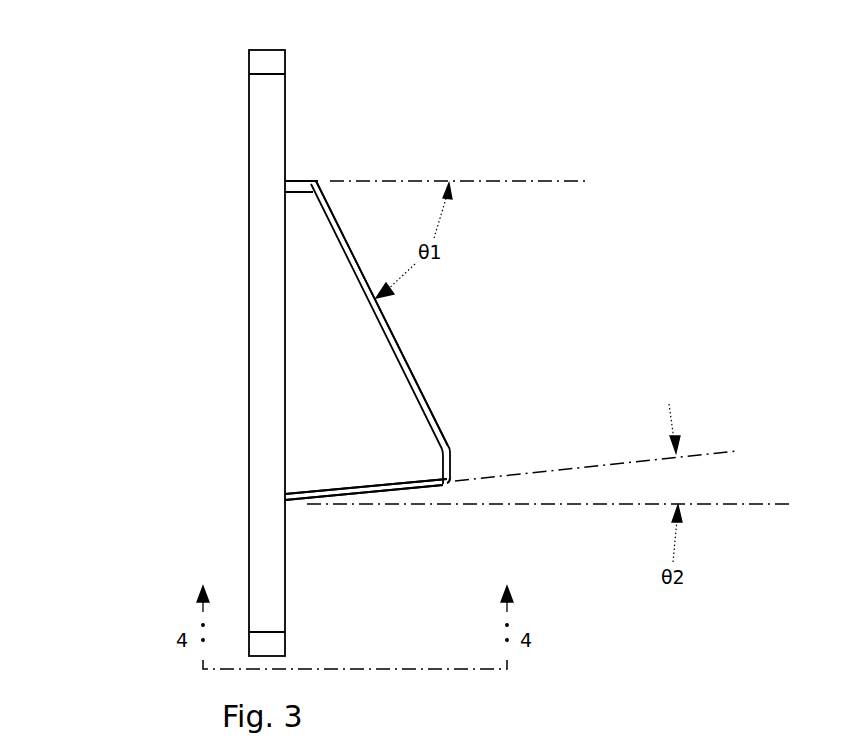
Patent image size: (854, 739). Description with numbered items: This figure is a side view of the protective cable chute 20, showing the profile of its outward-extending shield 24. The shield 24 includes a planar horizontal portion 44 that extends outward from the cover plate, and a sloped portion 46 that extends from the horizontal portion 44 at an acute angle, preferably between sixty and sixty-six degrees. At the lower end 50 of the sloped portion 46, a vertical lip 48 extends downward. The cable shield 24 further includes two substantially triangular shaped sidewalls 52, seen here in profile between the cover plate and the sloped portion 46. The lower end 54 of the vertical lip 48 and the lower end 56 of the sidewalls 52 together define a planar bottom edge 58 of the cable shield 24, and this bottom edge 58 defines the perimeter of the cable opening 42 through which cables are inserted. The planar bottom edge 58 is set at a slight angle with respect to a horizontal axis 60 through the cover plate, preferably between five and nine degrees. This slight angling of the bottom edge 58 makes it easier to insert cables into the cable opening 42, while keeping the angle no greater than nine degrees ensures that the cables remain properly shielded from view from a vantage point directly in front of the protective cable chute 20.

The protective cable chute 20 is at (138, 165).
The outward-extending shield 24 is at (413, 375).
The cable opening 42 is at (368, 499).
The planar horizontal portion 44 is at (297, 180).
The sloped portion 46 is at (381, 312).
The vertical lip 48 is at (450, 475).
The lower end of the sloped portion 50 is at (449, 449).
The sidewalls 52 is at (364, 391).
The lower end of the vertical lip 54 is at (445, 486).
The lower end of the sidewalls 56 is at (332, 501).
The planar bottom edge 58 is at (382, 497).
The horizontal axis 60 is at (742, 507).